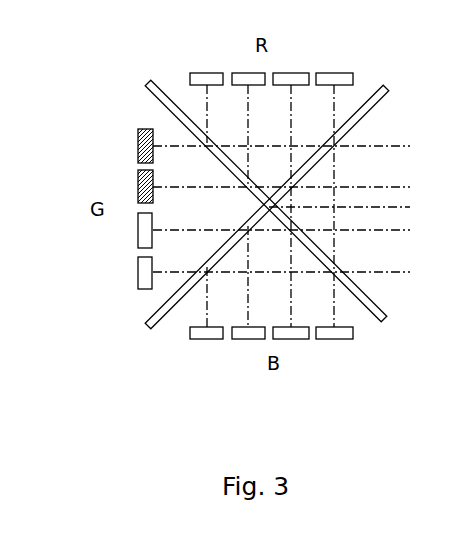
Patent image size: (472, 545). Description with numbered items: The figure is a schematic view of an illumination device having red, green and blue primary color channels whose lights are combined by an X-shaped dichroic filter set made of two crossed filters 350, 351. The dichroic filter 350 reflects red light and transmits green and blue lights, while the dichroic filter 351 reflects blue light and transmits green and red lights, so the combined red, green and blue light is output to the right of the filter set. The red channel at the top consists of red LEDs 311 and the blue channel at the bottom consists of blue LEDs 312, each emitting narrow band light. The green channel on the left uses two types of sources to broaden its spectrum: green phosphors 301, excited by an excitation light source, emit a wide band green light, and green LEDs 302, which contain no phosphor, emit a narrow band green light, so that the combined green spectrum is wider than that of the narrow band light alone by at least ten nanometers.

The dichroic filter 350 is at (147, 83).
The dichroic filter 351 is at (150, 322).
The green phosphors 301 is at (138, 150).
The green LEDs 302 is at (138, 277).
The red LEDs 311 is at (217, 73).
The blue LEDs 312 is at (208, 339).